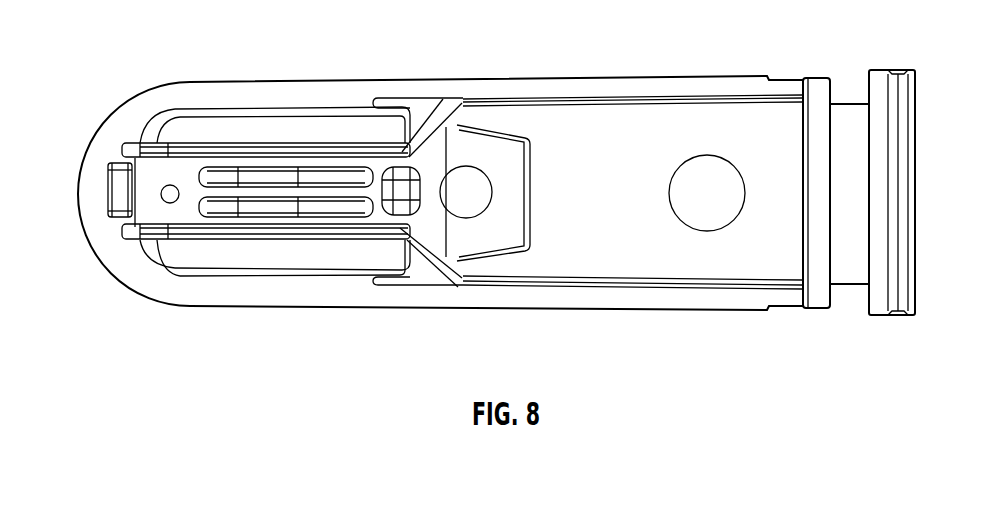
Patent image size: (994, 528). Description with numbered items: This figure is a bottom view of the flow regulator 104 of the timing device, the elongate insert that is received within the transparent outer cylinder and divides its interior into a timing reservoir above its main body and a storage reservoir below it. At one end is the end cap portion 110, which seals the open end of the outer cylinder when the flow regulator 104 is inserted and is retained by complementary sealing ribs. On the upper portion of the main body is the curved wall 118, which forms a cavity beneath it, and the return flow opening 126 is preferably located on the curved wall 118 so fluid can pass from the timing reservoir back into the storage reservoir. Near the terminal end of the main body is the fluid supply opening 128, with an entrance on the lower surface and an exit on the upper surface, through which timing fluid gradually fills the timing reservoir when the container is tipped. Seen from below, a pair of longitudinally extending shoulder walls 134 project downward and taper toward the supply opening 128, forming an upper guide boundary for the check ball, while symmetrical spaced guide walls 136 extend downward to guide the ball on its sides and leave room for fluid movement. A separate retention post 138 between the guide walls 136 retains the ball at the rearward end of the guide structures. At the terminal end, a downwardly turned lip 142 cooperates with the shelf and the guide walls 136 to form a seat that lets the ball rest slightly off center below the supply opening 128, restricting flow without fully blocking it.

The flow regulator 104 is at (507, 314).
The end cap portion 110 is at (899, 316).
The curved wall 118 is at (638, 153).
The return flow opening 126 is at (477, 187).
The fluid supply opening 128 is at (165, 200).
The shoulder walls 134 is at (243, 177).
The guide walls 136 is at (192, 168).
The retention post 138 is at (405, 191).
The downwardly turned lip 142 is at (112, 182).